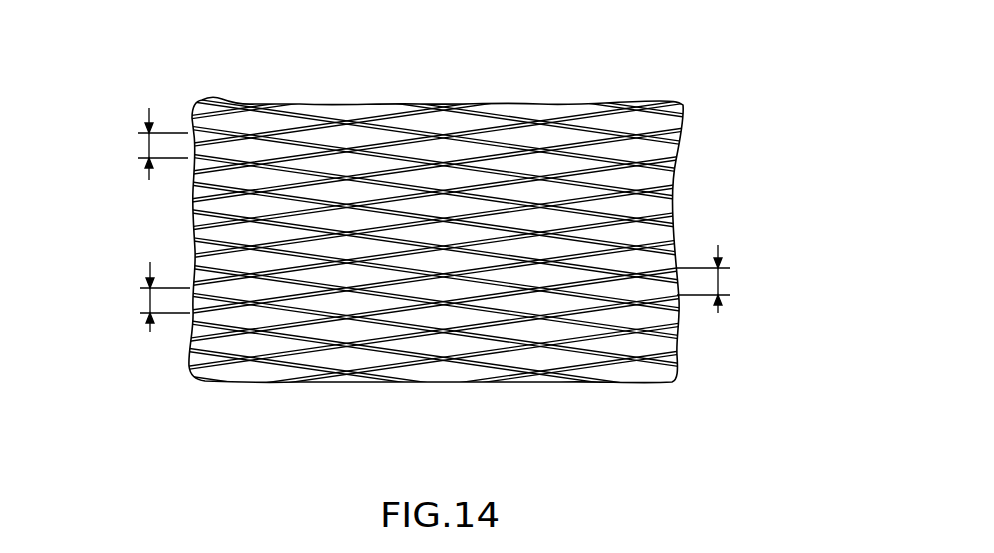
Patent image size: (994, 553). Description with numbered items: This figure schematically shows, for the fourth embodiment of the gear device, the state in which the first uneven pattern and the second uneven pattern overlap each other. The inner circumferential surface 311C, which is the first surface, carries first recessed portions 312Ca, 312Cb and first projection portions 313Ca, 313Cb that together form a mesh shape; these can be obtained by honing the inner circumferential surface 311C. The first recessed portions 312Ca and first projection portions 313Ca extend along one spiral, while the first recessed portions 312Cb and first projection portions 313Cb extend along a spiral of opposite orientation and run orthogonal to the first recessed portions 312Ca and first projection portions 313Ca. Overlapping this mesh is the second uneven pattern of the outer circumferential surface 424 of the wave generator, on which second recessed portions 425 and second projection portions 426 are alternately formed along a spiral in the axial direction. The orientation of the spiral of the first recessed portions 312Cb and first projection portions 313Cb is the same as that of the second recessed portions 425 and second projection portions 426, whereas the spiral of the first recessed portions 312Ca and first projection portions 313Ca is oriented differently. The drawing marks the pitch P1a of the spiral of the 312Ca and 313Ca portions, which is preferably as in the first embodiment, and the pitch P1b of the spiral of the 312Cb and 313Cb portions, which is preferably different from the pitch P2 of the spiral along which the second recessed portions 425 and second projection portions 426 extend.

The inner circumferential surface 311C is at (647, 99).
The first recessed portions 312Cb is at (392, 128).
The first projection portions 313Cb is at (636, 178).
The first recessed portions 312Ca is at (300, 350).
The first projection portions 313Ca is at (237, 343).
The outer circumferential surface 424 is at (505, 357).
The second recessed portions 425 is at (521, 358).
The second projection portions 426 is at (678, 330).
The pitch P1a is at (742, 279).
The pitch P1b is at (126, 144).
The pitch P2 is at (154, 297).